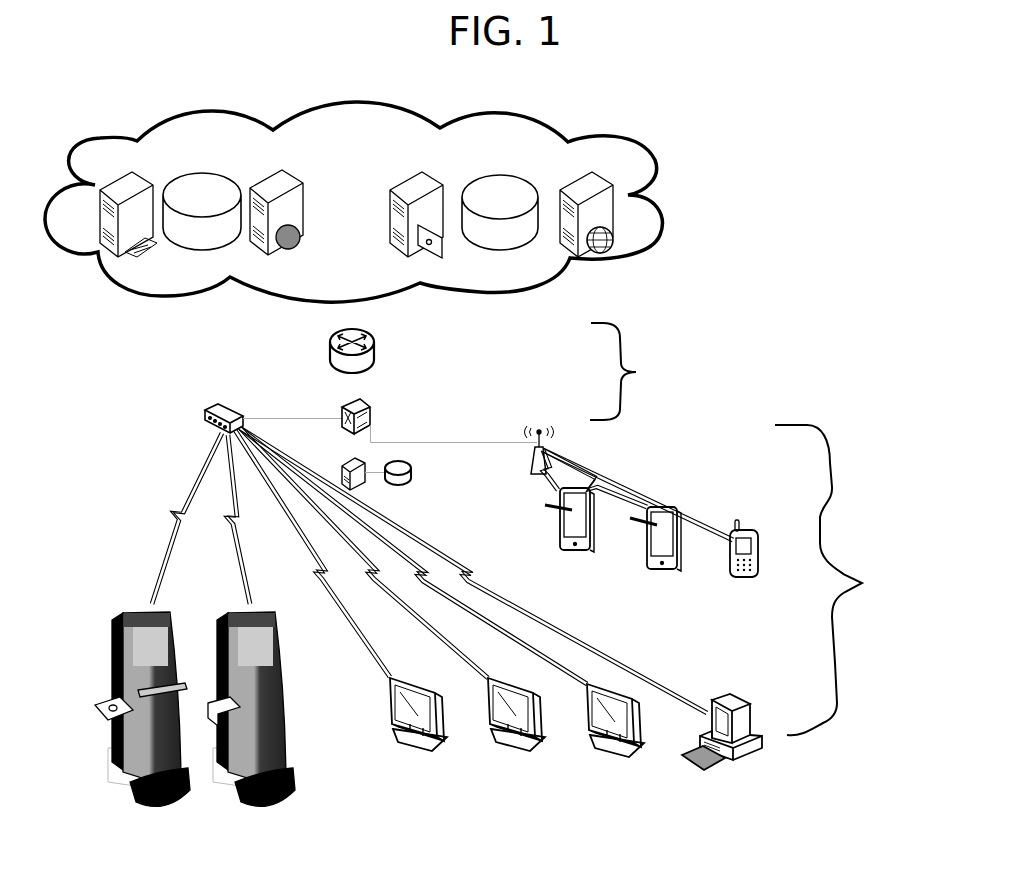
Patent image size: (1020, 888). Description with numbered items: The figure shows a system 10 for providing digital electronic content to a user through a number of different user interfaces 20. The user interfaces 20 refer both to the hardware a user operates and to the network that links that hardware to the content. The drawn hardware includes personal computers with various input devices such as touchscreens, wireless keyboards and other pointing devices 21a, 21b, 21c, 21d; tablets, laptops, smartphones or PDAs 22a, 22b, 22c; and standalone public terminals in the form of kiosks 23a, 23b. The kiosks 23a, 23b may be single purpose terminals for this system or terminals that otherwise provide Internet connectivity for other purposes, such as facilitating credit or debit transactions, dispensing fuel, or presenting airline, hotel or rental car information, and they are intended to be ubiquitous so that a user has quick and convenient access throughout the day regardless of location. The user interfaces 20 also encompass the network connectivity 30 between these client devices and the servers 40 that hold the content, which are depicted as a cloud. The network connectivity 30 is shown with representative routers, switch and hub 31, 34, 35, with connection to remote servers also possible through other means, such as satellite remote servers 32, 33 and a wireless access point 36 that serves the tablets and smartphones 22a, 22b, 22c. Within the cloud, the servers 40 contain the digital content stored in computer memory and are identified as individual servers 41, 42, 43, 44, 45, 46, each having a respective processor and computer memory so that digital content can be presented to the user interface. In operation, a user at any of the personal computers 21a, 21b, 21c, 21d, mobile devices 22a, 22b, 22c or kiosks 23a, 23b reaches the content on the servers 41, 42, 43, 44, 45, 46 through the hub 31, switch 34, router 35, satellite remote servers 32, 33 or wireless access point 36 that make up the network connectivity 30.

The system 10 is at (772, 748).
The user interfaces 20 is at (832, 580).
The personal computer 21a is at (430, 747).
The personal computer 21b is at (528, 747).
The personal computer 21c is at (627, 753).
The personal computer 21d is at (745, 748).
The tablet 22a is at (572, 542).
The tablet 22b is at (660, 563).
The smartphone 22c is at (748, 577).
The kiosk 23a is at (140, 808).
The kiosk 23b is at (245, 808).
The network connectivity 30 is at (627, 371).
The hub 31 is at (205, 414).
The satellite remote server 32 is at (342, 463).
The satellite remote server 33 is at (407, 482).
The switch 34 is at (370, 420).
The router 35 is at (373, 337).
The wireless access point 36 is at (532, 468).
The servers 40 is at (661, 230).
The server 41 is at (118, 233).
The server 42 is at (202, 230).
The server 43 is at (270, 238).
The server 44 is at (410, 233).
The server 45 is at (500, 232).
The server 46 is at (603, 223).